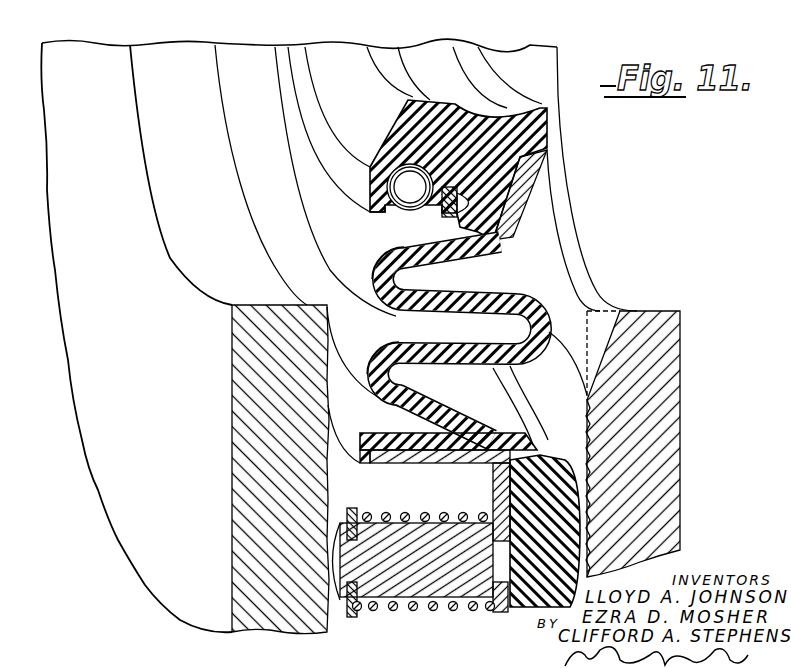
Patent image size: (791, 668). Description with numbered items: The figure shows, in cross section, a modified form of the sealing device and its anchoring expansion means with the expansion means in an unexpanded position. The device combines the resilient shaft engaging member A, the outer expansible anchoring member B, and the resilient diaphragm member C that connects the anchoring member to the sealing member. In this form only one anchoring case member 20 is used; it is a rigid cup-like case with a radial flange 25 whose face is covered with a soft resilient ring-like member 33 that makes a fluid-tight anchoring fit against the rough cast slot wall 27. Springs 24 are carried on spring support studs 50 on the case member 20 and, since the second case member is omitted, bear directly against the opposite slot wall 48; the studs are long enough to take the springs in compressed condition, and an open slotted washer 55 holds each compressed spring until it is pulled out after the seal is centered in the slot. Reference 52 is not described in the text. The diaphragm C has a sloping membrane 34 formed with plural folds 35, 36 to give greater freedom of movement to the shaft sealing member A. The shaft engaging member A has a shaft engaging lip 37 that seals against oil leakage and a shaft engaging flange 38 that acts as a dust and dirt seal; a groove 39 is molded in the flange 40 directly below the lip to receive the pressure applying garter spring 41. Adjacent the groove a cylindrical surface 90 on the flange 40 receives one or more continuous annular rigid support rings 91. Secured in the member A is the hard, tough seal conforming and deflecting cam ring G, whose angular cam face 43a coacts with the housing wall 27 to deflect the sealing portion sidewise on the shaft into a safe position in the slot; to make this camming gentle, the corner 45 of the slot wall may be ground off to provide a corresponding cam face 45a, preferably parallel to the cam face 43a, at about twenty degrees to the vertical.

The anchoring case member 20 is at (490, 447).
The springs 24 is at (393, 612).
The radial flange 25 is at (502, 490).
The slot wall 27 is at (612, 434).
The resilient ring-like member 33 is at (566, 528).
The membrane 34 is at (503, 295).
The fold 35 is at (373, 278).
The fold 36 is at (369, 352).
The shaft engaging lip 37 is at (458, 98).
The shaft engaging flange 38 is at (542, 110).
The groove 39 is at (400, 152).
The flange 40 is at (487, 118).
The garter spring 41 is at (400, 213).
The cam face 43a is at (524, 218).
The corner 45 is at (597, 302).
The cam face 45a is at (612, 345).
The slot wall 48 is at (328, 403).
The studs 50 is at (428, 612).
The retainer plates 52 is at (345, 544).
The open slotted washer 55 is at (352, 510).
The cylindrical surface 90 is at (441, 187).
The support rings 91 is at (445, 218).
The shaft engaging member A is at (458, 104).
The anchoring member B is at (463, 418).
The diaphragm member C is at (372, 291).
The cam ring G is at (540, 176).